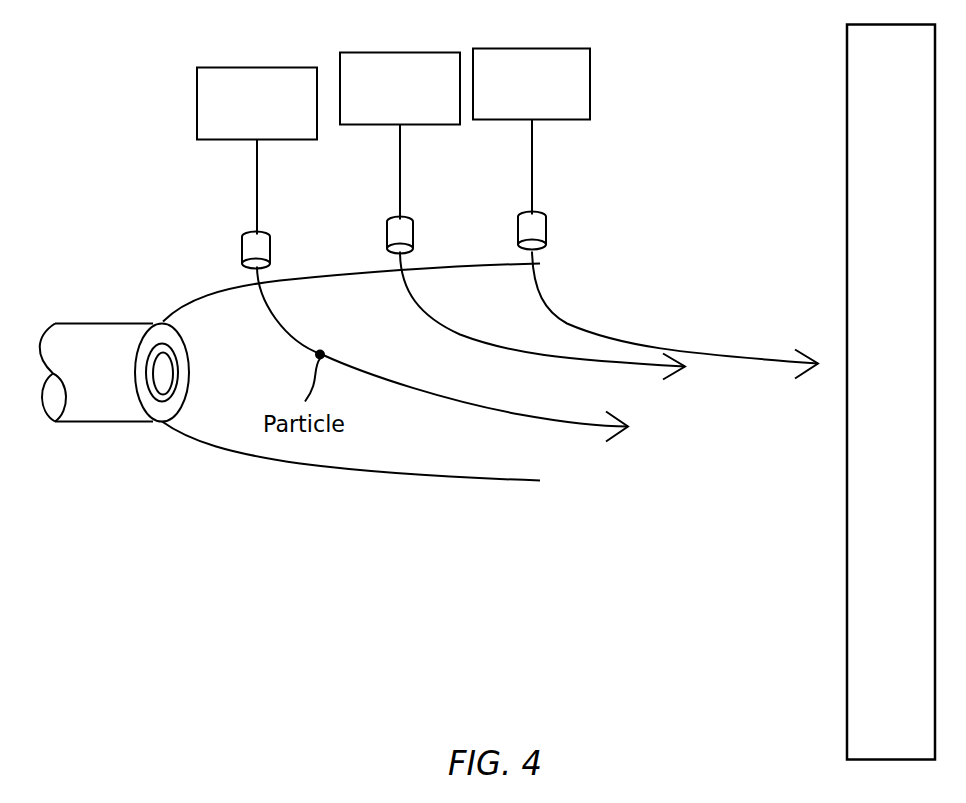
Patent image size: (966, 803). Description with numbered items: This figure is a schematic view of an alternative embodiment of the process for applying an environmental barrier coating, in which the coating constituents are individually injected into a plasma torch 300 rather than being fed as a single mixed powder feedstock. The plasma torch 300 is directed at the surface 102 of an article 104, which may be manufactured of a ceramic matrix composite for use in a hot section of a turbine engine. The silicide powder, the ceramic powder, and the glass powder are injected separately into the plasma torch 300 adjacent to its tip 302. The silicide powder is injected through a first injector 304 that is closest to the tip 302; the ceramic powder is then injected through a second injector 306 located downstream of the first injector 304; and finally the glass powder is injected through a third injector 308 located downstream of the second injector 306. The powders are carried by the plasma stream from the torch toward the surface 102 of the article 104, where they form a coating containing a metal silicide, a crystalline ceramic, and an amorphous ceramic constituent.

The surface 102 is at (847, 77).
The article 104 is at (873, 80).
The plasma torch 300 is at (105, 322).
The tip 302 is at (185, 327).
The first injector 304 is at (248, 233).
The second injector 306 is at (392, 220).
The third injector 308 is at (525, 217).